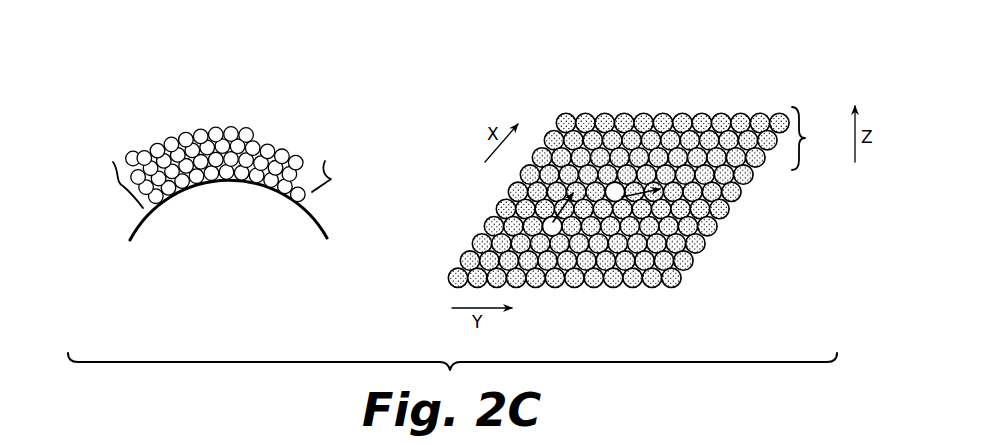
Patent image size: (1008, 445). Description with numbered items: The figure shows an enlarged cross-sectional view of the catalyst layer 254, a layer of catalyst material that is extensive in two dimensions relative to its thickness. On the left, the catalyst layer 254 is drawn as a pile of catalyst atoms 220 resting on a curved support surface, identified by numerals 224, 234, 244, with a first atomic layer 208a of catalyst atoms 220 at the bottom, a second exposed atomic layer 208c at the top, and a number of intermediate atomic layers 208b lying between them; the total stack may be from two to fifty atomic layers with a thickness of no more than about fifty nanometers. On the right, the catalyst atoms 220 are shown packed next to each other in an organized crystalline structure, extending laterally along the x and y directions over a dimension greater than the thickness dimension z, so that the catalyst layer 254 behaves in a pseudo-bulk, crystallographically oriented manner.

The first atomic layer 208a is at (266, 231).
The intermediate atomic layers 208b is at (331, 179).
The second exposed atomic layer 208c is at (160, 121).
The catalyst atoms 220 is at (627, 113).
The surface 224 is at (252, 231).
The surface 234 is at (252, 231).
The surface 244 is at (236, 210).
The catalyst layer 254 is at (121, 188).